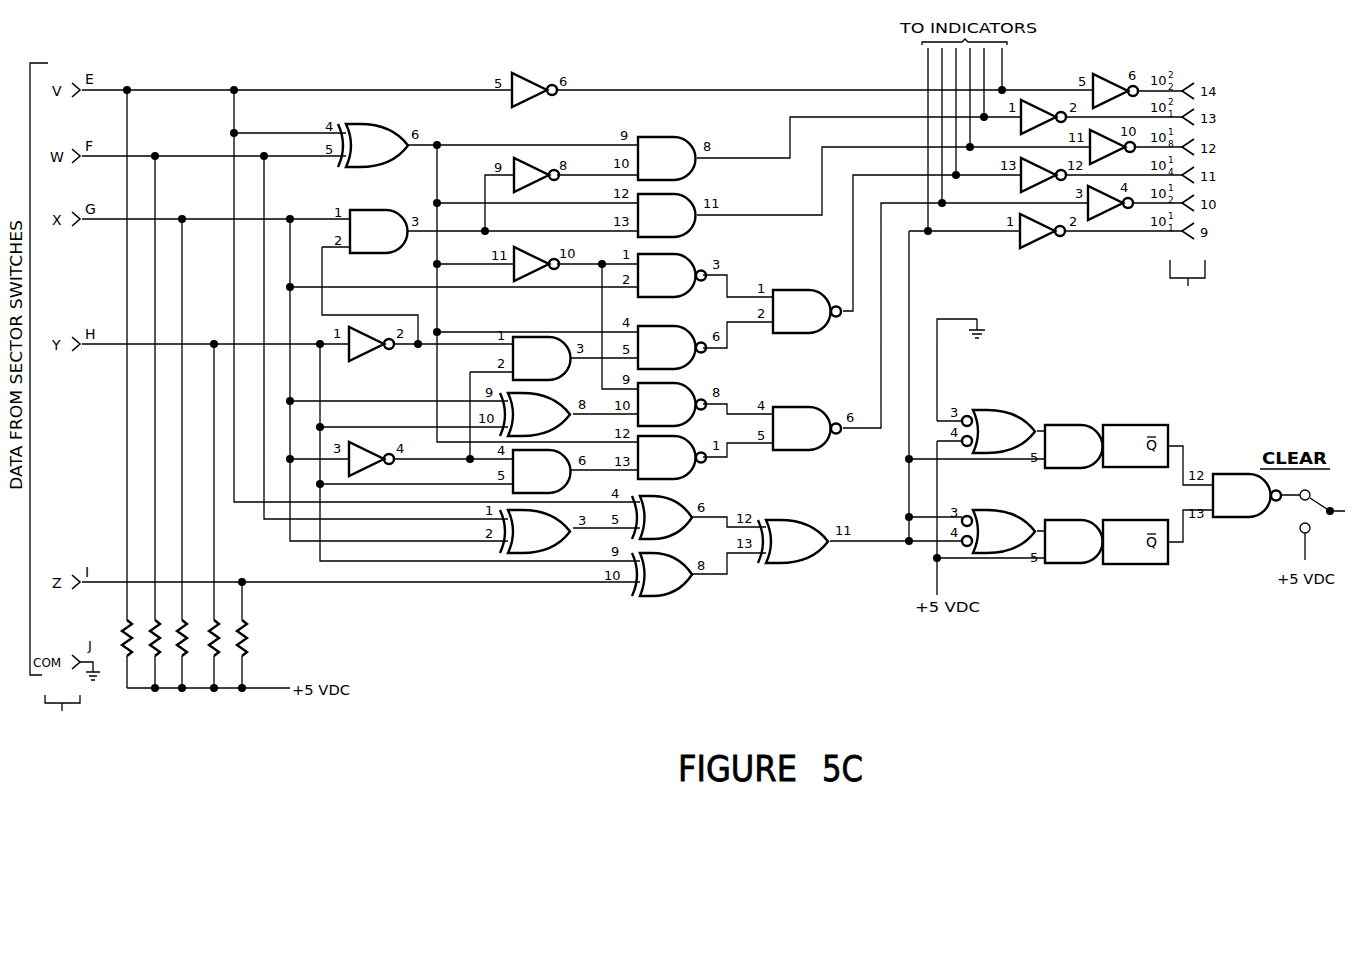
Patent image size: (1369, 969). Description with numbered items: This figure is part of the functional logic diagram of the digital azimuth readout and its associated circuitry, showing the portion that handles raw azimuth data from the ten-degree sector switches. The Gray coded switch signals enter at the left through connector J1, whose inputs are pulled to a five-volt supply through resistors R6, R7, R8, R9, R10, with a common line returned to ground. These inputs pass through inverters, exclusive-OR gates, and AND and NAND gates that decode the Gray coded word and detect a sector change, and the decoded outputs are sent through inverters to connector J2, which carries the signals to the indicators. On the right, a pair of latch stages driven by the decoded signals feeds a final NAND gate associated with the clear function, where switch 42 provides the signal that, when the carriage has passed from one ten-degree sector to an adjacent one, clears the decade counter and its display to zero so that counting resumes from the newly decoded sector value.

The switch 42 is at (1301, 533).
The pull-up resistor R6 is at (133, 389).
The pull-up resistor R7 is at (161, 422).
The pull-up resistor R8 is at (189, 453).
The pull-up resistor R9 is at (221, 516).
The pull-up resistor R10 is at (259, 635).
The connector J1 is at (62, 714).
The connector J2 is at (1187, 282).